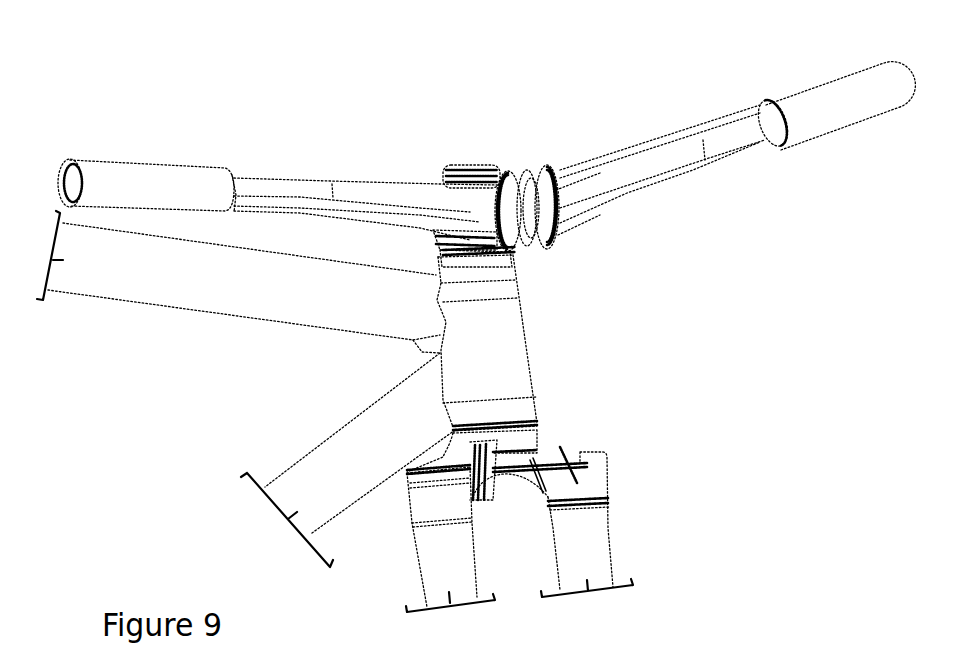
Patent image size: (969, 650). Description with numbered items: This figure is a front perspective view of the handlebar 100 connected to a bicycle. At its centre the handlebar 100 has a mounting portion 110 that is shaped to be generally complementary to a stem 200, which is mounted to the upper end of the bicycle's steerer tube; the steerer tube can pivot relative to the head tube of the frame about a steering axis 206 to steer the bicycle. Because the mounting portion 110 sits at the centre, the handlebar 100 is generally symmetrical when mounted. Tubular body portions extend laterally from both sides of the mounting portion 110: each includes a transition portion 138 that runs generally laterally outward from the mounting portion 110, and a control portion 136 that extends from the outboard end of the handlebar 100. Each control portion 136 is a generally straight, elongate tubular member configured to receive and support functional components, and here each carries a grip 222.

The handlebar 100 is at (268, 96).
The mounting portion 110 is at (517, 192).
The control portion 136 is at (267, 174).
The transition portion 138 is at (397, 193).
The stem 200 is at (580, 244).
The steering axis 206 is at (525, 614).
The grip 222 is at (125, 178).